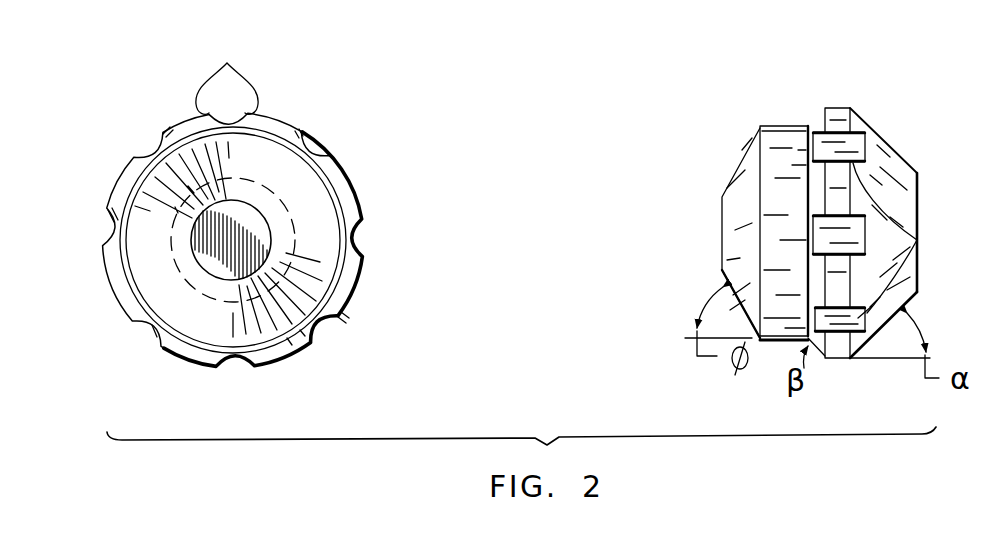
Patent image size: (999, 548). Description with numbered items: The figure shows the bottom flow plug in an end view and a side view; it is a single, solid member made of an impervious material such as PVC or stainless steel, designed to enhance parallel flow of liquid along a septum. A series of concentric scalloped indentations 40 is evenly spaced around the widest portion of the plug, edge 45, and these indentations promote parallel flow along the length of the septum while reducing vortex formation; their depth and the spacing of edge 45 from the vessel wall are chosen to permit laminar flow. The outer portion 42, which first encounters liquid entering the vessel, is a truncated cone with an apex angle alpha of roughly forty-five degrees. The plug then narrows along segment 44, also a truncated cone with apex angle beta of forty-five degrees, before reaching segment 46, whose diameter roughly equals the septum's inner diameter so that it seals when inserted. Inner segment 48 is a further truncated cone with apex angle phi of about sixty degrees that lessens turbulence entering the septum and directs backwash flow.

The scalloped indentations 40 is at (327, 330).
The outer portion 42 is at (207, 297).
The segment 44 is at (165, 342).
The edge 45 is at (227, 63).
The segment 46 is at (127, 287).
The inner segment 48 is at (253, 323).